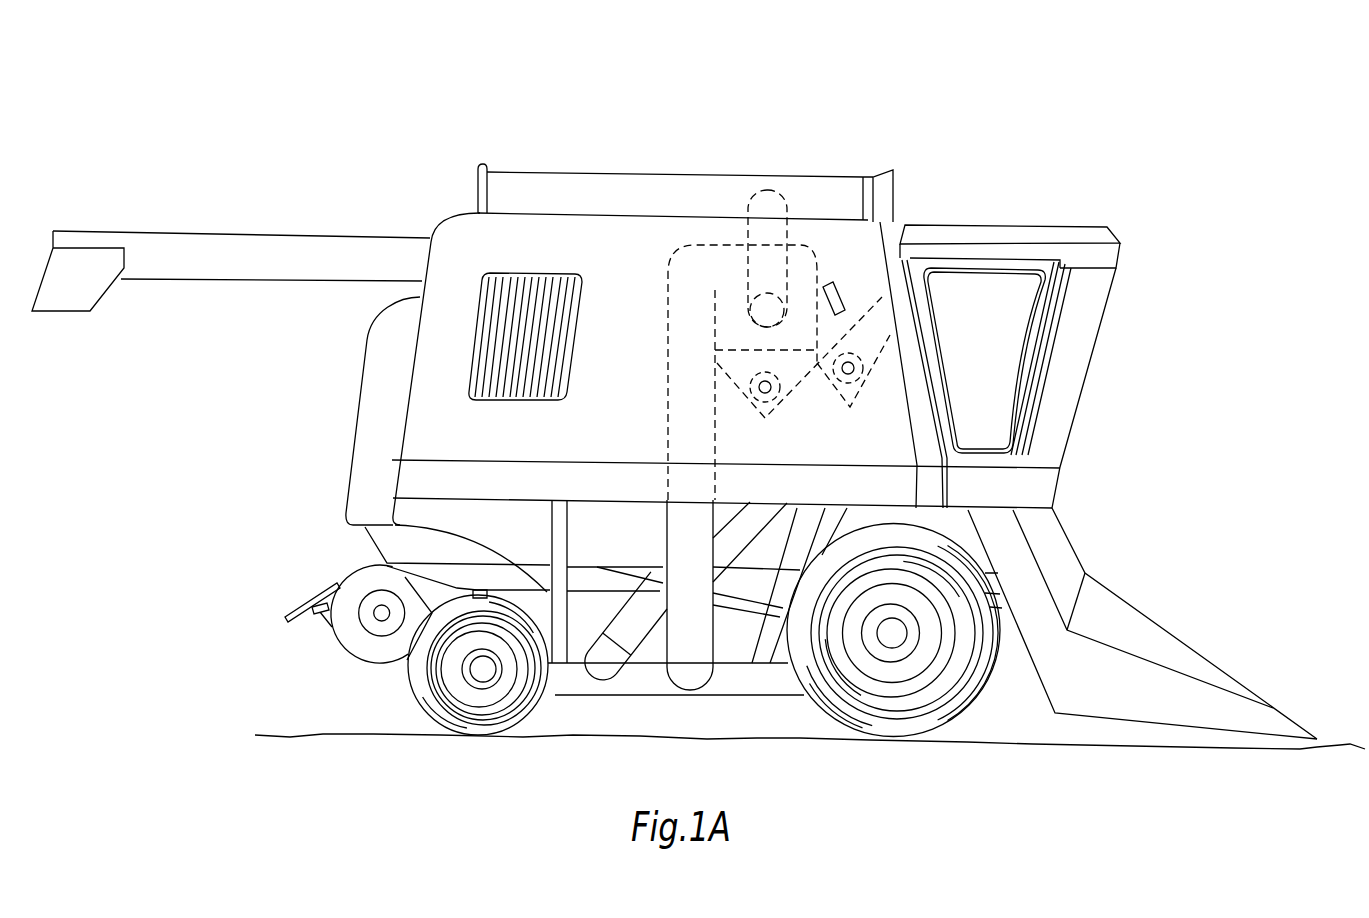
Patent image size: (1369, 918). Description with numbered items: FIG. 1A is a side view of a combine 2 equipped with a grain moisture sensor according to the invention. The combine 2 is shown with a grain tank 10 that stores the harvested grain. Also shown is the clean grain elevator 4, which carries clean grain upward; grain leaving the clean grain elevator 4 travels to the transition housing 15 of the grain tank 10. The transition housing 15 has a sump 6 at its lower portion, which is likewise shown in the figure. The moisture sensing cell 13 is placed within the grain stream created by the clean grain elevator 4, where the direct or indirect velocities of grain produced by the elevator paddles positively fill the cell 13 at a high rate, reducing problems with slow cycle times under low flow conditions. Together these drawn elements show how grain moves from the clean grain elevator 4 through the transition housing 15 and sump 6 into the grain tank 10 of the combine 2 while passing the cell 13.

The combine 2 is at (1092, 139).
The clean grain elevator 4 is at (668, 408).
The sump 6 is at (792, 395).
The grain tank 10 is at (573, 172).
The cell 13 is at (837, 290).
The transition housing 15 is at (805, 253).